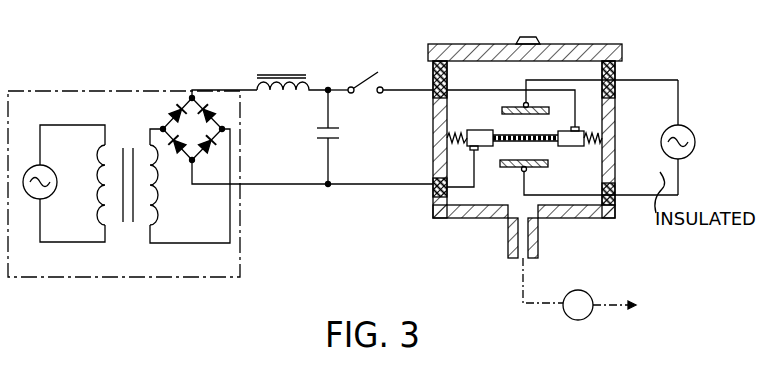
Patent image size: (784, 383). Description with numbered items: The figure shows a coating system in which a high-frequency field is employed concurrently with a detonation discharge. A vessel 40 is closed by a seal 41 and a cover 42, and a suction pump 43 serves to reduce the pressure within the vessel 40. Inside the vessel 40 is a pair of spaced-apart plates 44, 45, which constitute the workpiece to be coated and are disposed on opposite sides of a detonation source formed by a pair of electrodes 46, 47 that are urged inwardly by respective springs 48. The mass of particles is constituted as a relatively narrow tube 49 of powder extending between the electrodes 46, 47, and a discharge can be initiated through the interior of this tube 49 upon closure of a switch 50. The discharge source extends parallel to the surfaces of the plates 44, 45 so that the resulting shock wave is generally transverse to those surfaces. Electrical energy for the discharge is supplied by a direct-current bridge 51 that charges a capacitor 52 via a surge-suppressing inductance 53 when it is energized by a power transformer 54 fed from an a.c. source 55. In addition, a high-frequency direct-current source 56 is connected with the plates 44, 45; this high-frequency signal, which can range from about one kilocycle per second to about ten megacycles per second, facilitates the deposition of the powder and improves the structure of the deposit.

The vessel 40 is at (618, 100).
The seal 41 is at (615, 70).
The cover 42 is at (573, 48).
The suction pump 43 is at (569, 318).
The plate 44 is at (512, 105).
The plate 45 is at (510, 170).
The electrode 46 is at (612, 127).
The electrode 47 is at (486, 130).
The spring 48 is at (458, 136).
The tube of powder 49 is at (551, 142).
The switch 50 is at (360, 79).
The direct-current bridge 51 is at (198, 154).
The capacitor 52 is at (338, 140).
The surge-suppressing inductance 53 is at (278, 77).
The power transformer 54 is at (128, 224).
The a.c. source 55 is at (34, 199).
The high-frequency direct-current source 56 is at (697, 132).